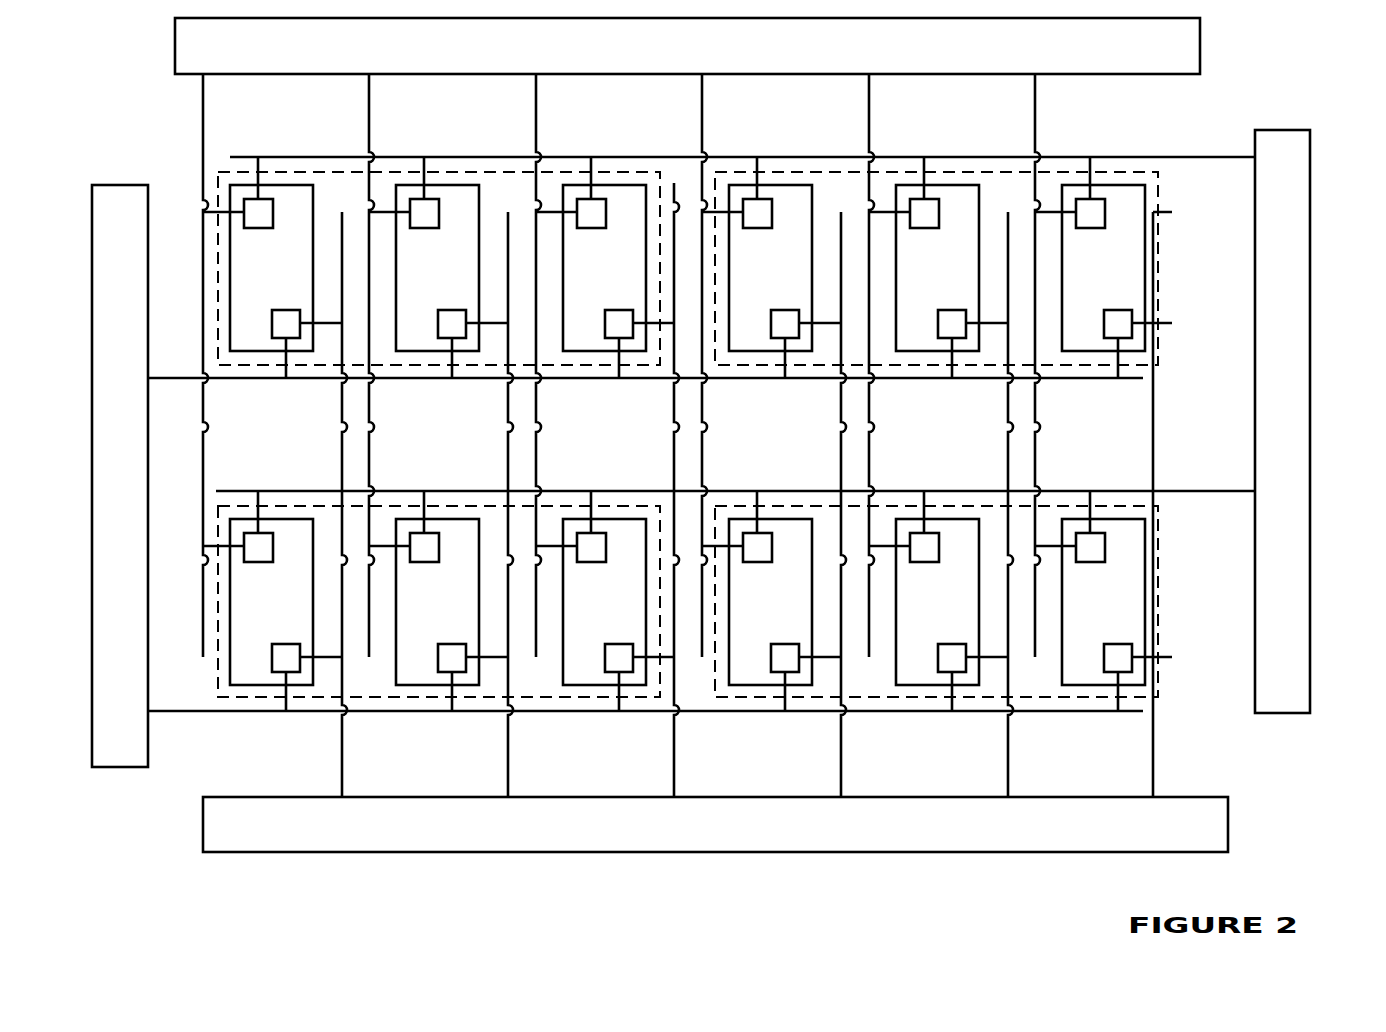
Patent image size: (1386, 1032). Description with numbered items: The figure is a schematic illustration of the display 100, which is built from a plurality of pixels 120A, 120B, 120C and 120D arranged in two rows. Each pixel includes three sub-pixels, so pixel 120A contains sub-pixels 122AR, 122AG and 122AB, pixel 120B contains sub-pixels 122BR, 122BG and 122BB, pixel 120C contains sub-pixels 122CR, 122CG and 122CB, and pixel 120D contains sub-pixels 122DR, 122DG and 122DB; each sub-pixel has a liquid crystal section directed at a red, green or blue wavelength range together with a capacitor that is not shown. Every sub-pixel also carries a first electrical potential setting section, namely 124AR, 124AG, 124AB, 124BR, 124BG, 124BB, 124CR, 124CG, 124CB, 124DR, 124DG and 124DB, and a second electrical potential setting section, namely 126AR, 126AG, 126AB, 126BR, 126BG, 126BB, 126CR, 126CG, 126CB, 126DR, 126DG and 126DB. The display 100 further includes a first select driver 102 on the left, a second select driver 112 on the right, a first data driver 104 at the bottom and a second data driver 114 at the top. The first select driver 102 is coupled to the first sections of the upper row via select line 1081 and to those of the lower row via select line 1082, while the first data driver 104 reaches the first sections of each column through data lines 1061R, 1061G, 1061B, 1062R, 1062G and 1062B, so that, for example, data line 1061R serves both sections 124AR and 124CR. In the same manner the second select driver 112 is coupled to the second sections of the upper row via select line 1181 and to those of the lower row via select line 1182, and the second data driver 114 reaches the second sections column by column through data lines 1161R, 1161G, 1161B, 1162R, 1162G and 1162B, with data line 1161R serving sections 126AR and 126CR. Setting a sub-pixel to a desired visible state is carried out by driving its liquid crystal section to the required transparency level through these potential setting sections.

The display 100 is at (1293, 85).
The first select driver 102 is at (122, 184).
The first data driver 104 is at (203, 805).
The second select driver 112 is at (1280, 713).
The second data driver 114 is at (1205, 62).
The data line 1061R is at (343, 757).
The data line 1061G is at (509, 757).
The data line 1061B is at (675, 757).
The data line 1062R is at (842, 757).
The data line 1062G is at (1009, 757).
The data line 1062B is at (1170, 745).
The select line 1081 is at (175, 378).
The select line 1082 is at (185, 712).
The data line 1161R is at (232, 100).
The data line 1161G is at (398, 100).
The data line 1161B is at (565, 100).
The data line 1162R is at (731, 100).
The data line 1162G is at (898, 100).
The data line 1162B is at (1064, 100).
The select line 1181 is at (1210, 160).
The select line 1182 is at (1212, 491).
The pixel 120A is at (217, 176).
The pixel 120B is at (1158, 283).
The pixel 120C is at (217, 697).
The pixel 120D is at (1158, 587).
The sub-pixel 122AR is at (294, 172).
The sub-pixel 122AG is at (460, 172).
The sub-pixel 122AB is at (627, 172).
The sub-pixel 122BR is at (793, 172).
The sub-pixel 122BG is at (960, 172).
The sub-pixel 122BB is at (1126, 172).
The sub-pixel 122CR is at (294, 505).
The sub-pixel 122CG is at (460, 505).
The sub-pixel 122CB is at (627, 505).
The sub-pixel 122DR is at (793, 505).
The sub-pixel 122DG is at (960, 505).
The sub-pixel 122DB is at (1126, 505).
The first electrical potential setting section 124AR is at (268, 338).
The first electrical potential setting section 124AG is at (434, 338).
The first electrical potential setting section 124AB is at (601, 338).
The first electrical potential setting section 124BR is at (767, 338).
The first electrical potential setting section 124BG is at (934, 338).
The first electrical potential setting section 124BB is at (1100, 338).
The first electrical potential setting section 124CR is at (268, 672).
The first electrical potential setting section 124CG is at (434, 672).
The first electrical potential setting section 124CB is at (601, 672).
The first electrical potential setting section 124DR is at (767, 672).
The first electrical potential setting section 124DG is at (934, 672).
The first electrical potential setting section 124DB is at (1100, 672).
The second electrical potential setting section 126AR is at (249, 197).
The second electrical potential setting section 126AG is at (415, 197).
The second electrical potential setting section 126AB is at (582, 197).
The second electrical potential setting section 126BR is at (748, 197).
The second electrical potential setting section 126BG is at (915, 197).
The second electrical potential setting section 126BB is at (1081, 197).
The second electrical potential setting section 126CR is at (249, 531).
The second electrical potential setting section 126CG is at (415, 531).
The second electrical potential setting section 126CB is at (582, 531).
The second electrical potential setting section 126DR is at (748, 531).
The second electrical potential setting section 126DG is at (915, 531).
The second electrical potential setting section 126DB is at (1081, 531).